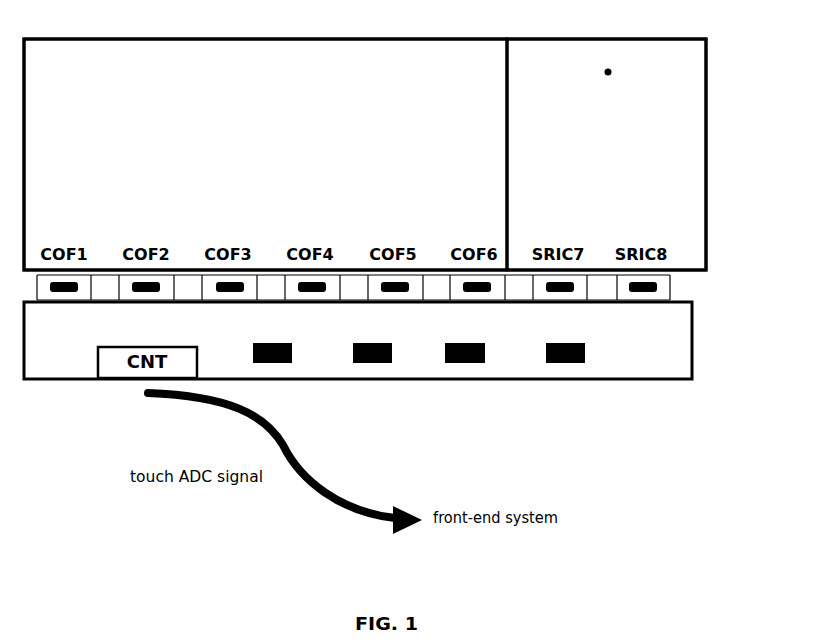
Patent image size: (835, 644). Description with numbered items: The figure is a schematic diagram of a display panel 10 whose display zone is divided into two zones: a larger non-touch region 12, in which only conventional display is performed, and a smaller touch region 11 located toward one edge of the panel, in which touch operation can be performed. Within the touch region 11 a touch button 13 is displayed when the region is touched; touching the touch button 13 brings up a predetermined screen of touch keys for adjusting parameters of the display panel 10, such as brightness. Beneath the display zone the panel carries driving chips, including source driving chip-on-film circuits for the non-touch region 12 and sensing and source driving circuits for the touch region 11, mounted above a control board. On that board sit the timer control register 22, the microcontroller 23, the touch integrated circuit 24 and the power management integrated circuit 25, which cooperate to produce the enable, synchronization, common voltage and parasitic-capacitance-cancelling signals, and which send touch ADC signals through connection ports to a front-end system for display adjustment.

The display panel 10 is at (713, 68).
The touch region 11 is at (606, 154).
The non-touch region 12 is at (265, 154).
The touch button 13 is at (611, 69).
The timer control register 22 is at (392, 355).
The microcontroller 23 is at (485, 355).
The touch integrated circuit 24 is at (585, 355).
The power management integrated circuit 25 is at (292, 356).